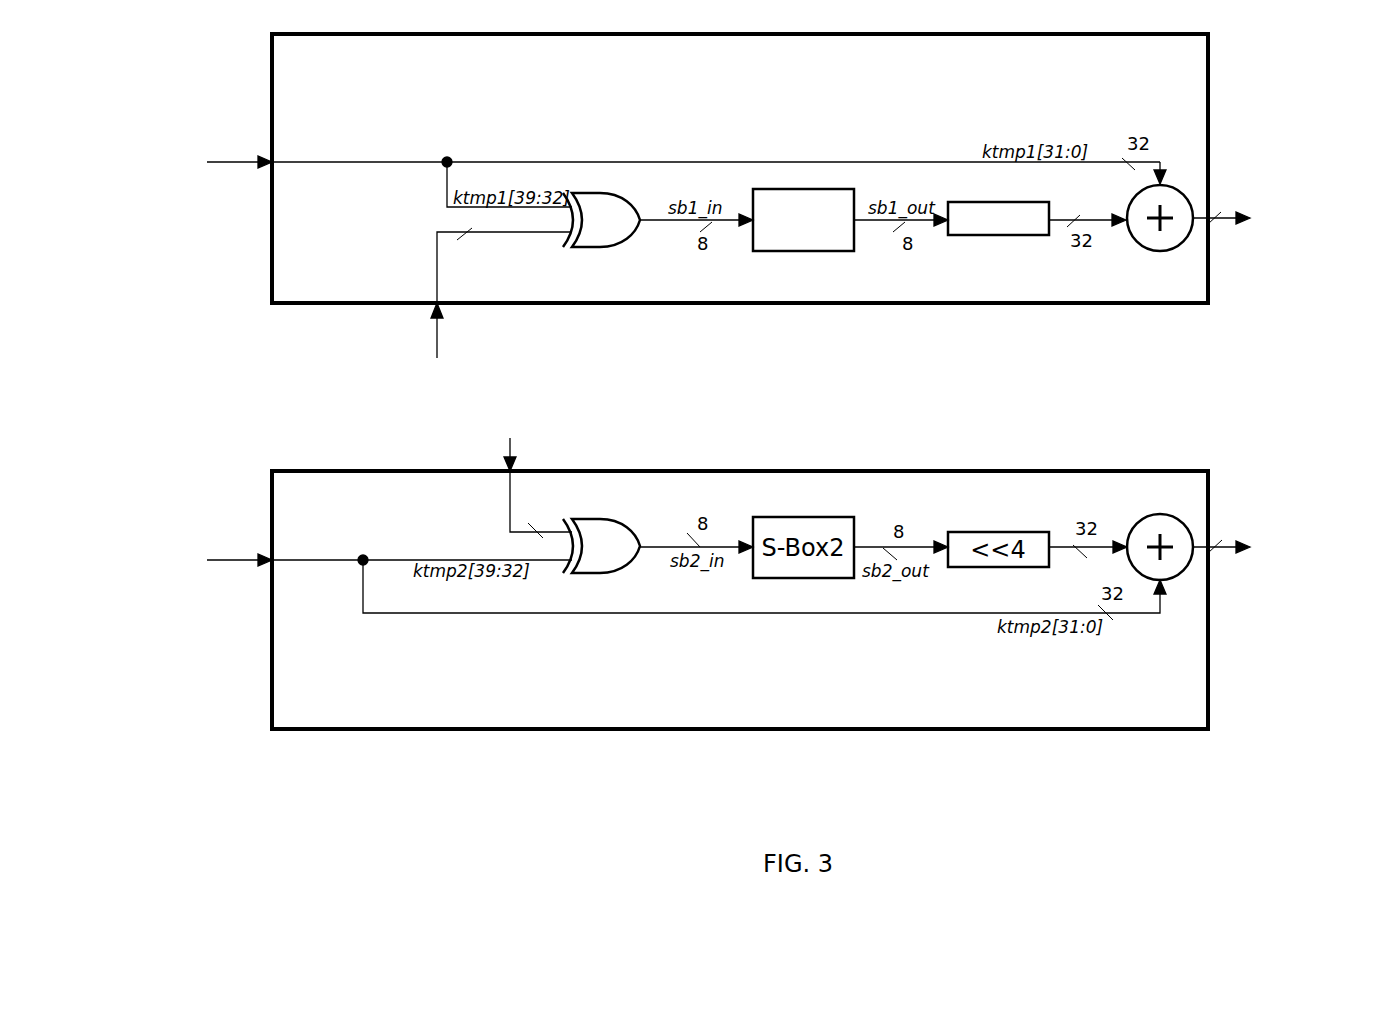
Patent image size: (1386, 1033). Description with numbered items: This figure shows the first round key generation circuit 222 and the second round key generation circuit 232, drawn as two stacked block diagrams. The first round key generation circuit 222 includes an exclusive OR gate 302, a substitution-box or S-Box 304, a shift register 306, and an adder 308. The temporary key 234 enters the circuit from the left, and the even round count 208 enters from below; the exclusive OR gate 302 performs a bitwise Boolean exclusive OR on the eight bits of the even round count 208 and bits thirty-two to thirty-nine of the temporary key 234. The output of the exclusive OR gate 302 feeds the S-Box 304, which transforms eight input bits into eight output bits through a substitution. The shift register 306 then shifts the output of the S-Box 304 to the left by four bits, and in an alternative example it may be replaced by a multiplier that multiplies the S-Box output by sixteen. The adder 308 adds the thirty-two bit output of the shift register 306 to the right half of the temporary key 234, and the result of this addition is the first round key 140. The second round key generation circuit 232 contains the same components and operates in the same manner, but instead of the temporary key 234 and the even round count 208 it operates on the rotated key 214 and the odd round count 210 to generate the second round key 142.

The first round key generation circuit 222 is at (766, 72).
The temporary key 234 is at (183, 157).
The even round count 208 is at (377, 310).
The exclusive OR gate 302 is at (585, 247).
The substitution-box (S-Box) 304 is at (841, 251).
The shift register 306 is at (965, 235).
The adder 308 is at (1158, 252).
The first round key 140 is at (1269, 259).
The second round key generation circuit 232 is at (799, 716).
The odd round count 210 is at (627, 472).
The rotated key 214 is at (186, 562).
The second round key 142 is at (1276, 589).